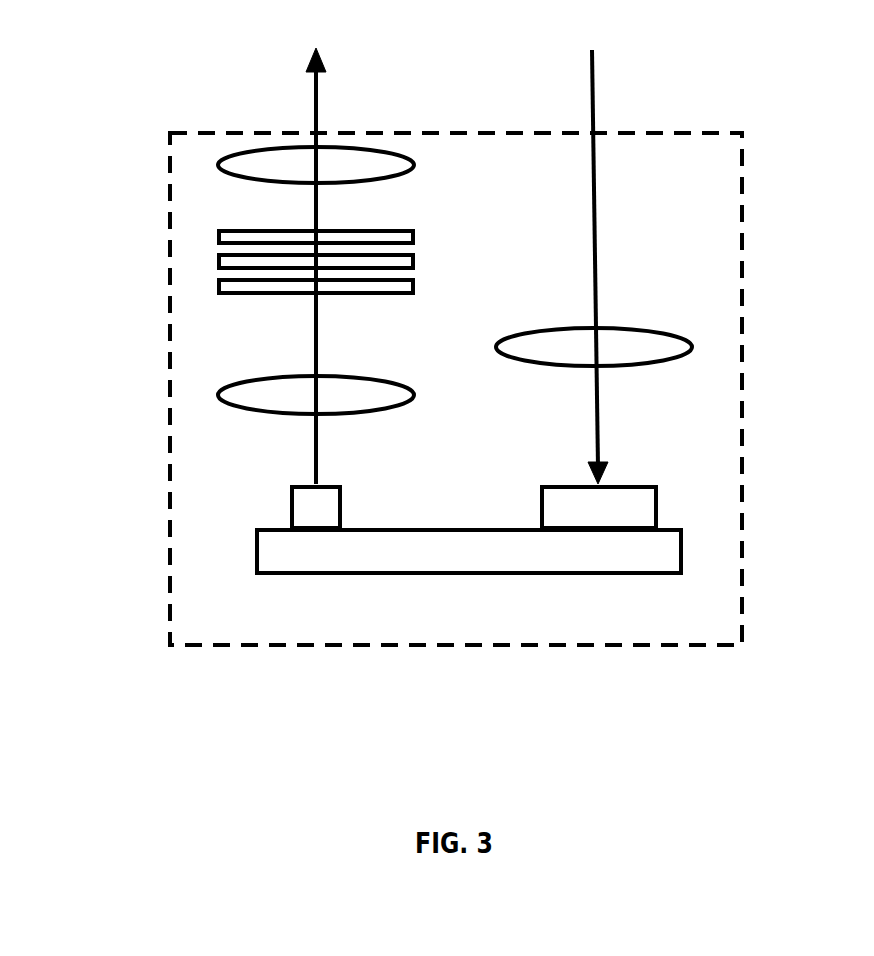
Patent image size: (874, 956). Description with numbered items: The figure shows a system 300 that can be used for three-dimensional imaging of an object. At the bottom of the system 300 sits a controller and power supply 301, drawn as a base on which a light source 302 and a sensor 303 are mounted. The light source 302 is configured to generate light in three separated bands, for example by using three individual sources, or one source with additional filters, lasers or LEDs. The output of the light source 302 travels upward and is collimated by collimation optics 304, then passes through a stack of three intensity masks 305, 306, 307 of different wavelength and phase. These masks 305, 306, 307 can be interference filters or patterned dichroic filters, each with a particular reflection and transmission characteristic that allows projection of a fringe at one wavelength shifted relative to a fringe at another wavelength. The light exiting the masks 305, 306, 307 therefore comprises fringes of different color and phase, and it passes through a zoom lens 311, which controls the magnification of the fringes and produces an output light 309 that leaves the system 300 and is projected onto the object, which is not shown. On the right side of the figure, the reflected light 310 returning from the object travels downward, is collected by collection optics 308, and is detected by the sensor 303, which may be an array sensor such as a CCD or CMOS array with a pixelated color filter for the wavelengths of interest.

The system 300 is at (178, 134).
The controller and power supply 301 is at (257, 550).
The light source 302 is at (342, 507).
The sensor 303 is at (658, 512).
The collimation optics 304 is at (218, 396).
The intensity mask 305 is at (218, 284).
The intensity mask 306 is at (416, 265).
The intensity mask 307 is at (218, 237).
The collection optics 308 is at (692, 348).
The output light 309 is at (318, 94).
The reflected light 310 is at (592, 77).
The zoom lens 311 is at (218, 165).